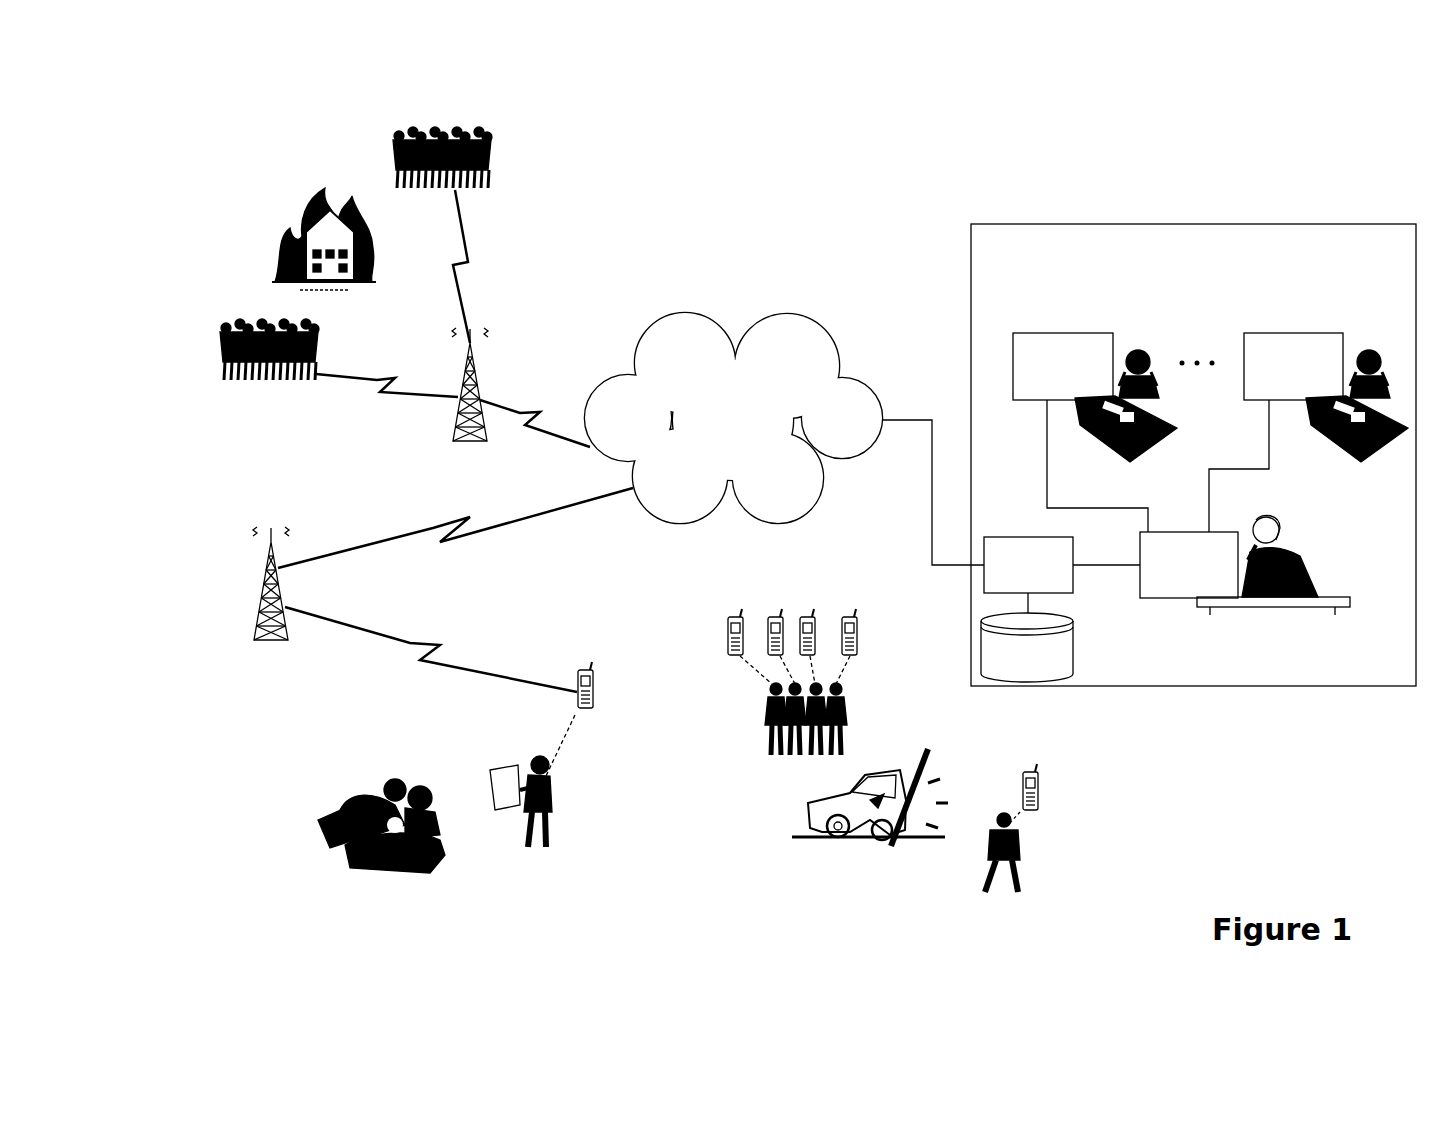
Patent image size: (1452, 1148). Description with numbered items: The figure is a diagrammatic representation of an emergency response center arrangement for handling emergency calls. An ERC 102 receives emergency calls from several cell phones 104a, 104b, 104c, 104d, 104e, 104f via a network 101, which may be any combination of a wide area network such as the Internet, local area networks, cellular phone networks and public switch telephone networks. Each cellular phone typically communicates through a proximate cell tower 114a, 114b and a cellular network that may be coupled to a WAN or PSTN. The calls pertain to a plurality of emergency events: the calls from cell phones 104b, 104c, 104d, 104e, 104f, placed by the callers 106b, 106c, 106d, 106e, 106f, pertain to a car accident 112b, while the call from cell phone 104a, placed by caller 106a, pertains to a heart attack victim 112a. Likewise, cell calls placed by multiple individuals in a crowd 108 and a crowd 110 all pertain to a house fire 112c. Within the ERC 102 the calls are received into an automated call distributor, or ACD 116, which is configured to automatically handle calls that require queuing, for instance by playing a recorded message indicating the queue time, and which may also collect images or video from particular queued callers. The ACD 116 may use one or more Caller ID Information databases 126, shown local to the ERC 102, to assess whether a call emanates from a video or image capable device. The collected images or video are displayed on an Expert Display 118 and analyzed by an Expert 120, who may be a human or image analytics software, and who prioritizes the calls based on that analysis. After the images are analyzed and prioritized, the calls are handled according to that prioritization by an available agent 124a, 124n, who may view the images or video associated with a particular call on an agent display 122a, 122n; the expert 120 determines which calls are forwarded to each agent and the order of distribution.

The network 101 is at (788, 313).
The emergency response center (ERC) 102 is at (971, 272).
The cell phone 104a is at (594, 693).
The cell phone 104b is at (1028, 775).
The cell phone 104c is at (741, 617).
The cell phone 104d is at (781, 617).
The cell phone 104e is at (812, 617).
The cell phone 104f is at (853, 617).
The caller 106a is at (545, 840).
The caller 106b is at (985, 865).
The caller 106c is at (770, 738).
The caller 106d is at (790, 757).
The caller 106e is at (815, 757).
The caller 106f is at (850, 731).
The crowd 108 is at (318, 345).
The crowd 110 is at (492, 160).
The heart attack victim 112a is at (340, 863).
The car accident 112b is at (860, 838).
The house fire 112c is at (373, 252).
The cell tower 114a is at (279, 550).
The cell tower 114b is at (480, 380).
The automated call distributor (ACD) 116 is at (1025, 537).
The expert display 118 is at (1170, 532).
The expert 120 is at (1287, 525).
The agent display 122a is at (1057, 333).
The agent display 122n is at (1288, 333).
The agent 124a is at (1132, 345).
The agent 124n is at (1362, 345).
The Caller ID Information database 126 is at (1073, 668).